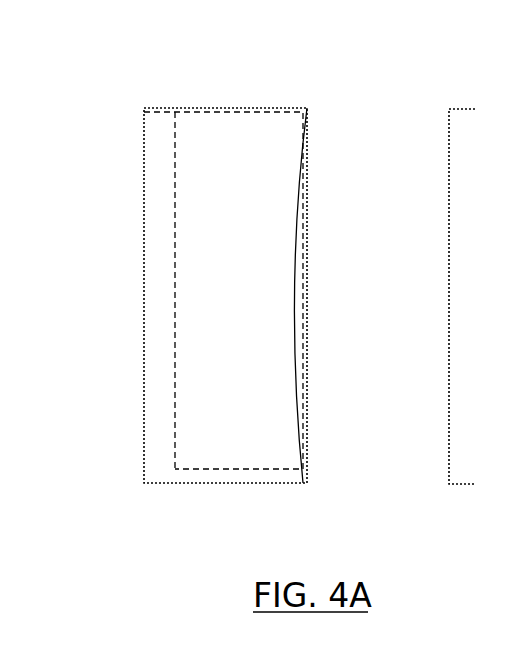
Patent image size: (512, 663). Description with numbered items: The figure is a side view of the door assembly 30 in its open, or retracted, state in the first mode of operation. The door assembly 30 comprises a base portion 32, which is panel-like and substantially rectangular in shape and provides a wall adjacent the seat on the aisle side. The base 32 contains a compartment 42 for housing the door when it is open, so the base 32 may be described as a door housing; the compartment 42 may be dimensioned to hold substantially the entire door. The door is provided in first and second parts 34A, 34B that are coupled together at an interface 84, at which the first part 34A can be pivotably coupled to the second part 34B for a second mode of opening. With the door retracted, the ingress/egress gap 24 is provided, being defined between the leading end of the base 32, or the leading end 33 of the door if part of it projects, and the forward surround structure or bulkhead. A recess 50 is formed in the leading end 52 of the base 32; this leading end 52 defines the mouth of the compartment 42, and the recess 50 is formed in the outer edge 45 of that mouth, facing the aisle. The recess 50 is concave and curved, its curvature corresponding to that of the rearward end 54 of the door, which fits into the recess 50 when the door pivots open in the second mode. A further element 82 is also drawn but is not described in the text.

The ingress/egress gap 24 is at (388, 469).
The door assembly 30 is at (139, 504).
The base portion 32 is at (145, 471).
The leading end of the door 33 is at (307, 400).
The first part of the door 34A is at (290, 144).
The second part of the door 34B is at (156, 225).
The compartment 42 is at (215, 485).
The edge of the mouth 45 is at (298, 228).
The recess 50 is at (298, 273).
The leading end of the base 52 is at (297, 357).
The rearward end of the door 54 is at (175, 322).
The frame member 82 is at (464, 103).
The interface 84 is at (177, 150).